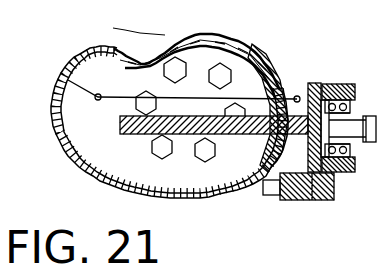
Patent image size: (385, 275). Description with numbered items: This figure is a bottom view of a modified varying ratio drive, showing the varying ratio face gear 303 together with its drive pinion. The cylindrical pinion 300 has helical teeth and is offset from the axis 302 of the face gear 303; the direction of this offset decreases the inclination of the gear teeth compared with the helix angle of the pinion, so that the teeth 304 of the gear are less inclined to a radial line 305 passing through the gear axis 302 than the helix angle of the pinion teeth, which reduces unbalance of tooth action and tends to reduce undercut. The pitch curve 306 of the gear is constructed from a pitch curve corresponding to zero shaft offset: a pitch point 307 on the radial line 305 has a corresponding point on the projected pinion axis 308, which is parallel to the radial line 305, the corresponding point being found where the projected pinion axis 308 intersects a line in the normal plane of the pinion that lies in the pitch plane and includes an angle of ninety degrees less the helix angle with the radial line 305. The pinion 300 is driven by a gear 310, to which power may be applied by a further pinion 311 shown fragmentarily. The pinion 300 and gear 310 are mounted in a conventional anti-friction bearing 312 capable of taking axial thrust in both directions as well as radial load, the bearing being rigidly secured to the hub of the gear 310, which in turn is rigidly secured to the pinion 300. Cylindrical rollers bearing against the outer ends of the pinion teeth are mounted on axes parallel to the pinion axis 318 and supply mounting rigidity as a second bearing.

The cylindrical pinion 300 is at (142, 134).
The axis of the face gear 302 is at (57, 78).
The face gear 303 is at (118, 53).
The teeth of the gear 304 is at (299, 96).
The radial line 305 is at (240, 98).
The pitch curve of the gear 306 is at (257, 41).
The pitch point 307 is at (306, 86).
The projected pinion axis 308 is at (189, 136).
The gear 310 is at (314, 200).
The further pinion 311 is at (284, 199).
The anti-friction bearing 312 is at (336, 174).
The pinion axis 318 is at (76, 158).